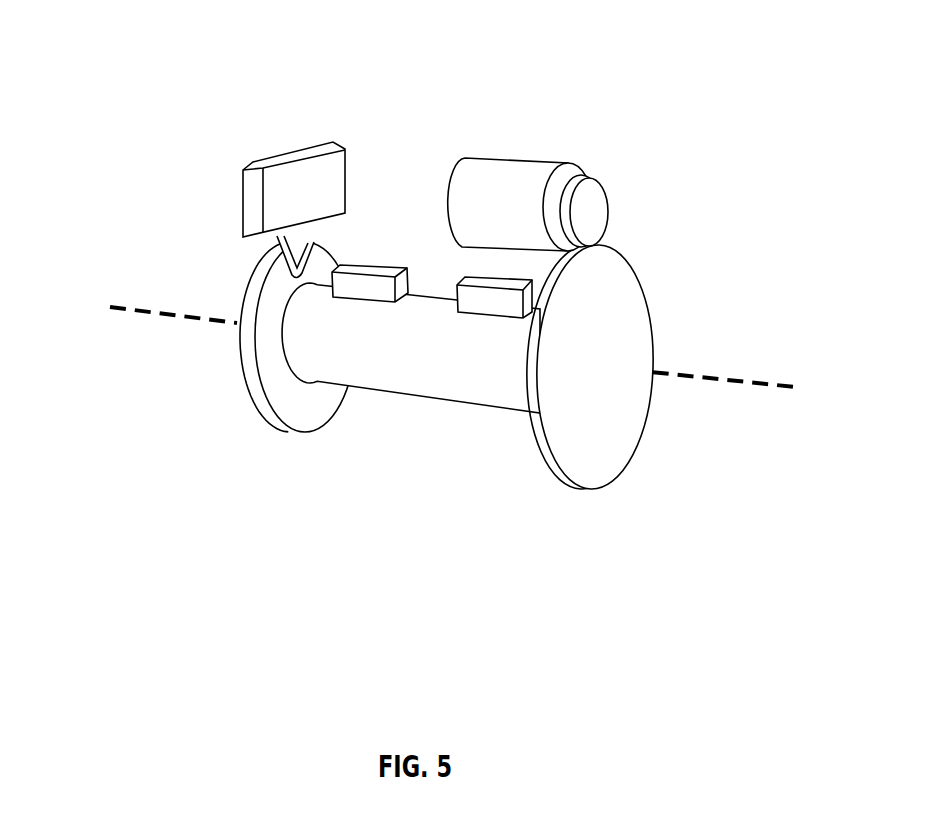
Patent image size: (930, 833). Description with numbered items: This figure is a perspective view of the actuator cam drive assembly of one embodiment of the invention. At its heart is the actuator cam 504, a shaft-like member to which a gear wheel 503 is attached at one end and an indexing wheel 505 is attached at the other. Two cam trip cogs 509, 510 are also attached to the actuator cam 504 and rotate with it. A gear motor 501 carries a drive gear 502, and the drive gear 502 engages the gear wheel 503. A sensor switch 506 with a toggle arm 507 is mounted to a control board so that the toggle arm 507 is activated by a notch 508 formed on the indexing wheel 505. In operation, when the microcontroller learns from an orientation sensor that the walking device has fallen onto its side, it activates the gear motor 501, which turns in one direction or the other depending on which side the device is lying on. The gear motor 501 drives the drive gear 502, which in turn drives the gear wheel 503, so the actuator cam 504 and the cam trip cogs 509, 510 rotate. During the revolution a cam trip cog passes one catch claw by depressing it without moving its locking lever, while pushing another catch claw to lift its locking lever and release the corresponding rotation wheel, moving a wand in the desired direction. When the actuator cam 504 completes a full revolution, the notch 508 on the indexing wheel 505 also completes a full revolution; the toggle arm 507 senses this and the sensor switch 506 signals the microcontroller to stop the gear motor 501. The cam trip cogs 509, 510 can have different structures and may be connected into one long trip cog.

The gear motor 501 is at (552, 152).
The drive gear 502 is at (611, 186).
The gear wheel 503 is at (660, 303).
The actuator cam 504 is at (367, 390).
The indexing wheel 505 is at (236, 392).
The sensor switch 506 is at (257, 150).
The toggle arm 507 is at (312, 227).
The notch 508 is at (259, 249).
The cam trip cog 509 is at (383, 309).
The cam trip cog 510 is at (496, 322).